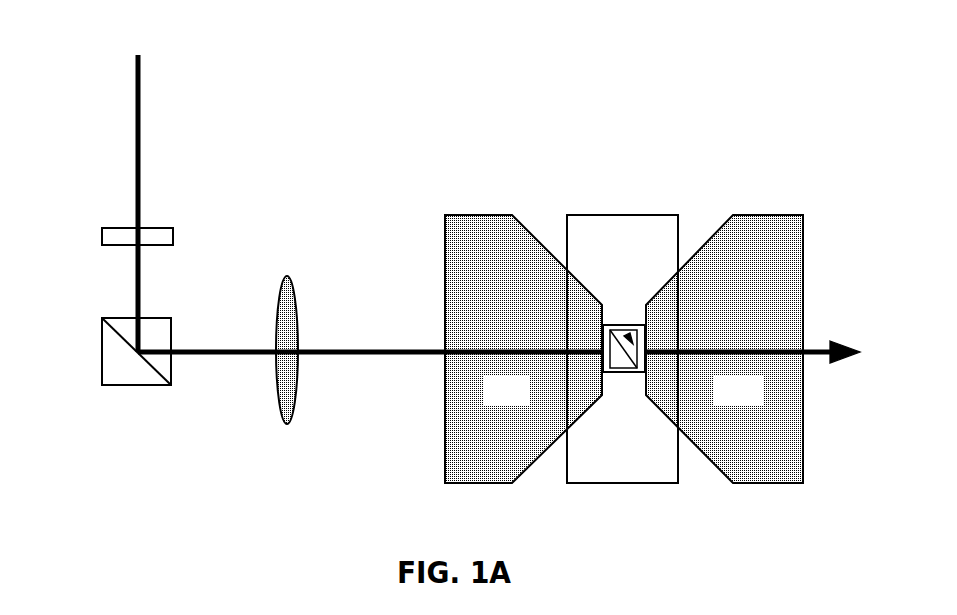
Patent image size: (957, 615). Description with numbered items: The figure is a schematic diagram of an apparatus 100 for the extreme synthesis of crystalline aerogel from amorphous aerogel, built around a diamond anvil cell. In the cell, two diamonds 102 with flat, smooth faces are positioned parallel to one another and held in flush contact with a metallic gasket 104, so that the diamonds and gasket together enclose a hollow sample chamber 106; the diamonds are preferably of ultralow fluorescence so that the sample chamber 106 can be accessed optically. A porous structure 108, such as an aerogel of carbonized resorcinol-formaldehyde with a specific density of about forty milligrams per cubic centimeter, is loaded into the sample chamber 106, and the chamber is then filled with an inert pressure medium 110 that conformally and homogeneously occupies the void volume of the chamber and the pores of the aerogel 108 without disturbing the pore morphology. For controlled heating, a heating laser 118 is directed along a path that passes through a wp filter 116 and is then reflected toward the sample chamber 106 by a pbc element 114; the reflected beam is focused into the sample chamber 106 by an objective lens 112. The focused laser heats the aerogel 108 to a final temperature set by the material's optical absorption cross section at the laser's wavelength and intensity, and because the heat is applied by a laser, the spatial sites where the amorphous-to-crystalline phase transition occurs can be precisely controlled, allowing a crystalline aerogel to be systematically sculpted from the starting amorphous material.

The apparatus 100 is at (513, 76).
The diamonds 102 is at (624, 349).
The metallic gasket 104 is at (623, 215).
The sample chamber 106 is at (633, 325).
The porous structure 108 is at (603, 343).
The inert pressure medium 110 is at (638, 372).
The objective lens 112 is at (286, 275).
The pbc element 114 is at (160, 318).
The wp filter 116 is at (166, 228).
The heating laser 118 is at (136, 112).